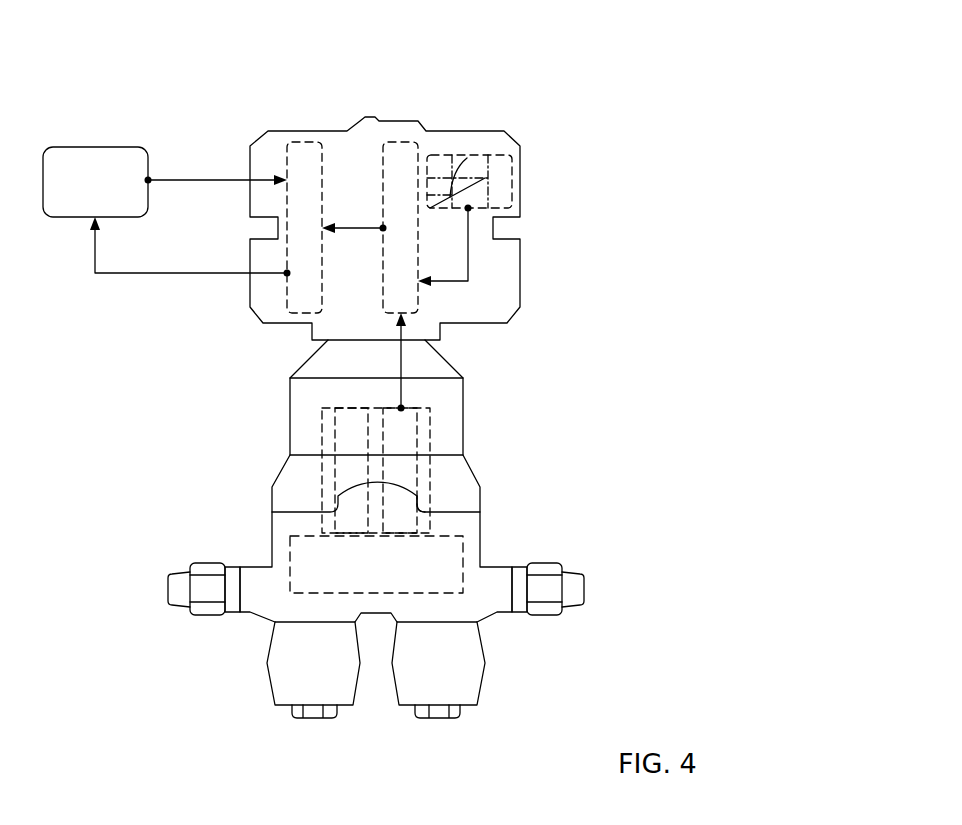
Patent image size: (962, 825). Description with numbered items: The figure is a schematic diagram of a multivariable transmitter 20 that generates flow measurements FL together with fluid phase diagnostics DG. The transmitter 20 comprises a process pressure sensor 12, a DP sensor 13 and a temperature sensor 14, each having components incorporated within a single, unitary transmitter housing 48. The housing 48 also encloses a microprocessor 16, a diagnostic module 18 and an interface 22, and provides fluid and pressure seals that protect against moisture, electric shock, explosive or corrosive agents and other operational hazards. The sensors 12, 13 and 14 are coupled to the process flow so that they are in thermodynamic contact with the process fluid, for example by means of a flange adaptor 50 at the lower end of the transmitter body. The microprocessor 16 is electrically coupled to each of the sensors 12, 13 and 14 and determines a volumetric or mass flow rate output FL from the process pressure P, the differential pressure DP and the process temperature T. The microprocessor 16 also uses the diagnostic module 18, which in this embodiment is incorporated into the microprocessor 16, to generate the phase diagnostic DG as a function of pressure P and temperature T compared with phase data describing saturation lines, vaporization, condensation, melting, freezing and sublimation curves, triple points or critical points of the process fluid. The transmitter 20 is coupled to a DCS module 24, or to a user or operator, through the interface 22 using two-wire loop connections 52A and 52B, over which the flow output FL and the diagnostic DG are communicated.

The process pressure sensor 12 is at (333, 488).
The DP sensor 13 is at (432, 438).
The temperature sensor 14 is at (420, 486).
The microprocessor 16 is at (420, 289).
The diagnostic module 18 is at (512, 162).
The transmitter 20 is at (395, 359).
The interface 22 is at (300, 143).
The DCS module 24 is at (70, 146).
The transmitter housing 48 is at (396, 121).
The flange adaptor 50 is at (280, 654).
The two-wire loop connection 52A is at (213, 180).
The two-wire loop connection 52B is at (230, 273).